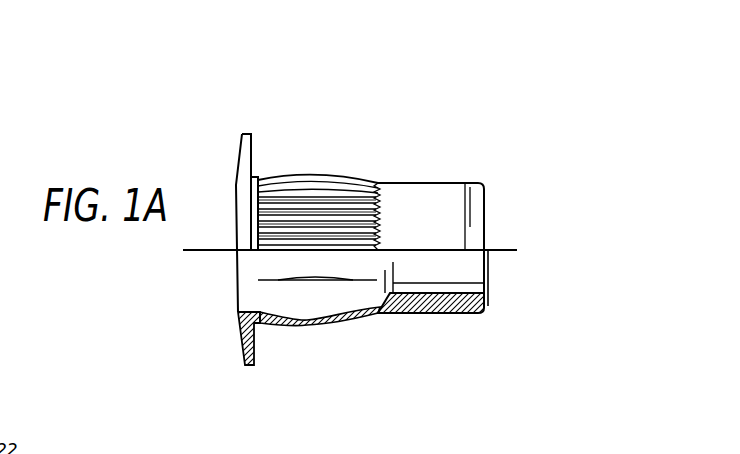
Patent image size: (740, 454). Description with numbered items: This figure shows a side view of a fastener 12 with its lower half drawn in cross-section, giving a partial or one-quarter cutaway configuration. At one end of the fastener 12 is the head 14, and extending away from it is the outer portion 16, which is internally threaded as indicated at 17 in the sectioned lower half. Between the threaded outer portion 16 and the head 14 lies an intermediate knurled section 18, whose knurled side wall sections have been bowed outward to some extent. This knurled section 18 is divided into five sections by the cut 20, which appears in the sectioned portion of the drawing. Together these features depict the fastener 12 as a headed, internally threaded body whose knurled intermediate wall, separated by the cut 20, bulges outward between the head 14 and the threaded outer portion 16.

The fastener 12 is at (530, 106).
The head 14 is at (236, 177).
The outer portion 16 is at (417, 207).
The internal threads 17 is at (455, 292).
The intermediate knurled section 18 is at (313, 187).
The cut 20 is at (315, 280).